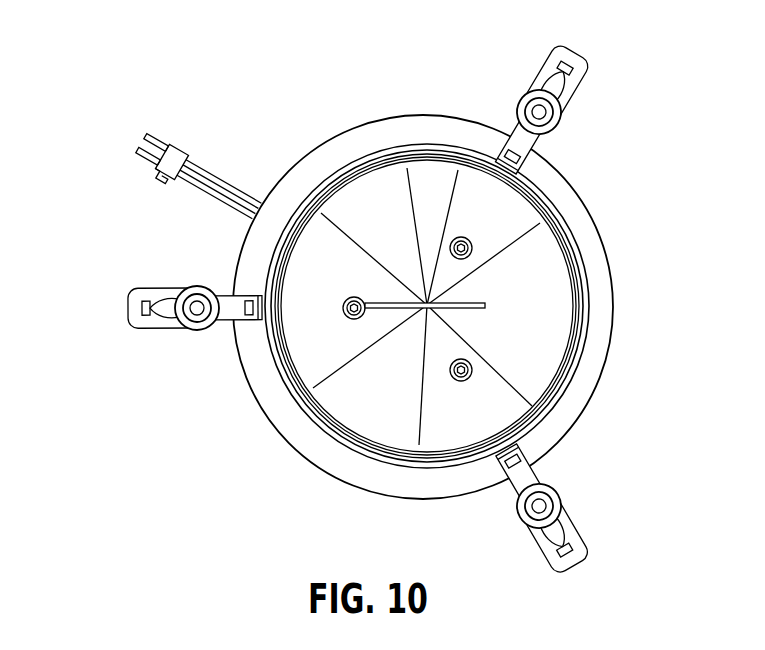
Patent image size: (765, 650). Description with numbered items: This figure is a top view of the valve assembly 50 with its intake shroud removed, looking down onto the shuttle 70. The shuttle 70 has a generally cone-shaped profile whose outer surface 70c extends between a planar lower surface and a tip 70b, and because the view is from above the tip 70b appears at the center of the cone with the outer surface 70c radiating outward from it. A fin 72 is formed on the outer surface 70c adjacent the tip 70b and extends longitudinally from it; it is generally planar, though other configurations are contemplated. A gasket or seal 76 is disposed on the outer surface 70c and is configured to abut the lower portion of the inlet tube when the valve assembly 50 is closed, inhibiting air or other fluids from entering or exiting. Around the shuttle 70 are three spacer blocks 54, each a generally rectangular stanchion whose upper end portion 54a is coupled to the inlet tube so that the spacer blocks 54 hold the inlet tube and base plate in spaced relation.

The valve assembly 50 is at (126, 92).
The spacer block 54 is at (578, 85).
The upper end portion 54a is at (565, 67).
The shuttle 70 is at (389, 180).
The tip 70b is at (427, 305).
The outer surface 70c is at (517, 218).
The fin 72 is at (485, 307).
The seal 76 is at (570, 235).